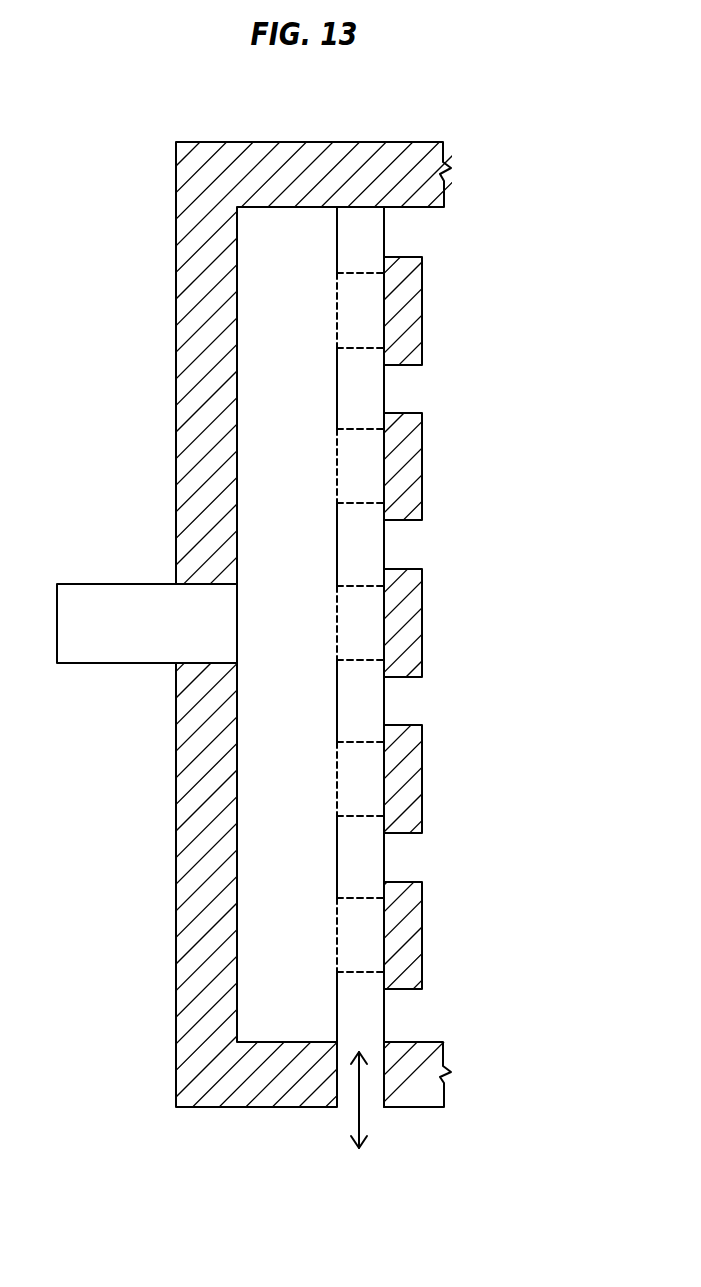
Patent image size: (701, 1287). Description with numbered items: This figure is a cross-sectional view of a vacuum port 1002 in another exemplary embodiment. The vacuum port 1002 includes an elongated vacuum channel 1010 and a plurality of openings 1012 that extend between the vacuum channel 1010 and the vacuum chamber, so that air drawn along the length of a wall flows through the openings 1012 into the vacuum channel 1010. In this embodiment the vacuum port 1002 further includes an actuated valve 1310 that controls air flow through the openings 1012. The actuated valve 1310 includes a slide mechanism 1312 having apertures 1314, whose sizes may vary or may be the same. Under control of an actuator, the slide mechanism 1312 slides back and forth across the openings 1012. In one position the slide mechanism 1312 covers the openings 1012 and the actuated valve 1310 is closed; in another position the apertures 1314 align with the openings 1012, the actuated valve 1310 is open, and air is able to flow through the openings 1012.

The vacuum port 1002 is at (126, 583).
The elongated vacuum channel 1010 is at (255, 710).
The openings 1012 is at (350, 624).
The actuated valve 1310 is at (307, 132).
The slide mechanism 1312 is at (352, 237).
The apertures 1314 is at (353, 311).